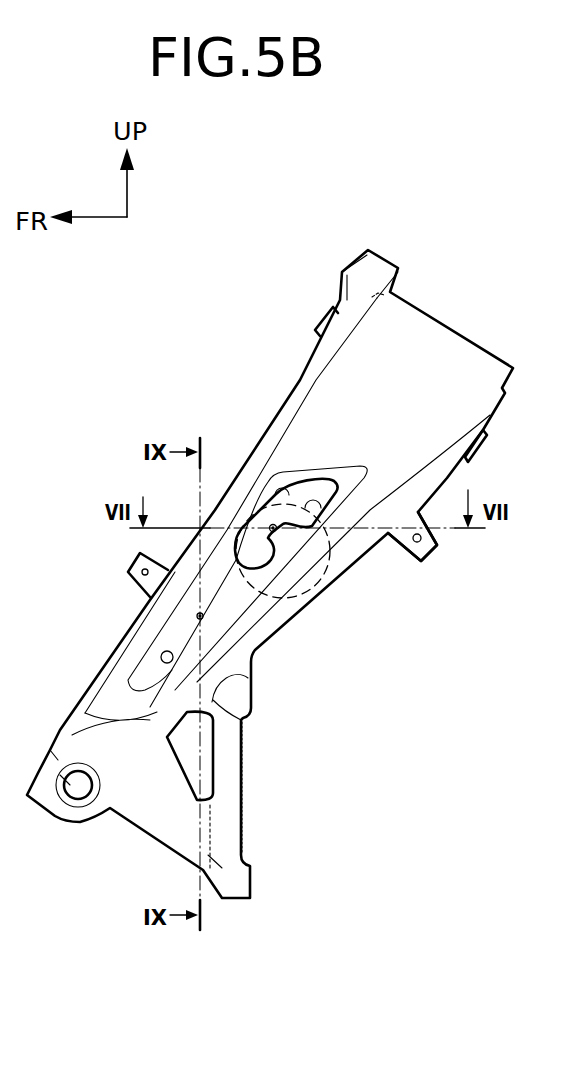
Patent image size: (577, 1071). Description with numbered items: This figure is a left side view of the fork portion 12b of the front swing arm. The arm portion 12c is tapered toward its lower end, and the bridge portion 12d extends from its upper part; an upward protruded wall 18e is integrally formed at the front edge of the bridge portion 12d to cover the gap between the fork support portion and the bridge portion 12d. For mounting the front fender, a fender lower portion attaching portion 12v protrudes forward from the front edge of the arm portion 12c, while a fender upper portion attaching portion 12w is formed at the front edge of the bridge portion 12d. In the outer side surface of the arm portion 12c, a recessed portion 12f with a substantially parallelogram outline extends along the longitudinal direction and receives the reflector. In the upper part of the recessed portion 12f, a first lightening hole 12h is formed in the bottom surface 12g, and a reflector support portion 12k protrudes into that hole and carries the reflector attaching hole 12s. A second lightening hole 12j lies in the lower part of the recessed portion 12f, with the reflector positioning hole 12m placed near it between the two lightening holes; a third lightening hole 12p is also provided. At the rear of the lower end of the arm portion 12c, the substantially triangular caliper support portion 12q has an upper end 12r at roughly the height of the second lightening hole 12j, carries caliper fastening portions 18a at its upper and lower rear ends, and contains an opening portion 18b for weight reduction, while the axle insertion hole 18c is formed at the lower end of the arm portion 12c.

The fork portion 12b is at (160, 372).
The arm portion 12c is at (276, 401).
The bridge portion 12d is at (422, 348).
The recessed portion 12f is at (370, 482).
The bottom surface 12g is at (240, 602).
The first lightening hole 12h is at (390, 536).
The second lightening hole 12j is at (161, 655).
The reflector support portion 12k is at (276, 531).
The reflector positioning hole 12m is at (197, 616).
The third lightening hole 12p is at (270, 497).
The caliper support portion 12q is at (246, 780).
The upper end 12r is at (252, 660).
The reflector attaching hole 12s is at (292, 561).
The fender lower portion attaching portion 12v is at (136, 560).
The fender upper portion attaching portion 12w is at (325, 320).
The caliper fastening portion 18a is at (252, 692).
The opening portion 18b is at (187, 763).
The axle insertion hole 18c is at (80, 790).
The upward protruded wall 18e is at (358, 254).